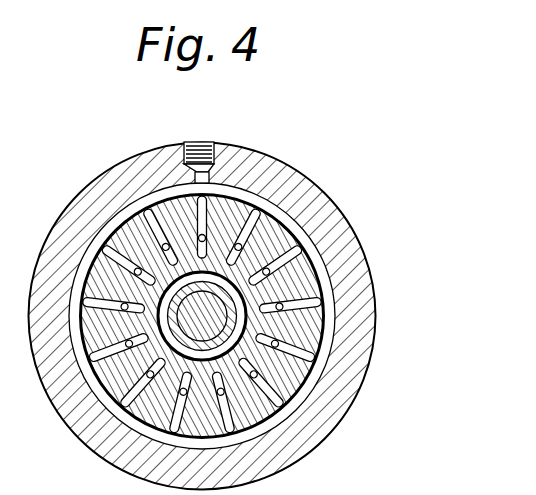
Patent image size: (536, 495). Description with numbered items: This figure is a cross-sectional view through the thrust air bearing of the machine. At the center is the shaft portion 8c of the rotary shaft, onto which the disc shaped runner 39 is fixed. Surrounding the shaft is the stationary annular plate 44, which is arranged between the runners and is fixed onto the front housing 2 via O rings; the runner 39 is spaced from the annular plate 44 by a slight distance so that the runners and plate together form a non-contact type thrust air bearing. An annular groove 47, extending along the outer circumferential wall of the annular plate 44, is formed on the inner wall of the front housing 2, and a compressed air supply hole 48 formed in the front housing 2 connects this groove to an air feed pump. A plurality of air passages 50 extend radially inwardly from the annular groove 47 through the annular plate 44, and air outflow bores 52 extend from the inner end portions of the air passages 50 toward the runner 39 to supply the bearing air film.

The front housing 2 is at (337, 398).
The shaft portion 8c is at (128, 466).
The runner 39 is at (227, 318).
The stationary annular plate 44 is at (300, 281).
The annular groove 47 is at (272, 216).
The compressed air supply hole 48 is at (200, 141).
The air passage 50 is at (198, 236).
The air outflow bore 52 is at (168, 244).